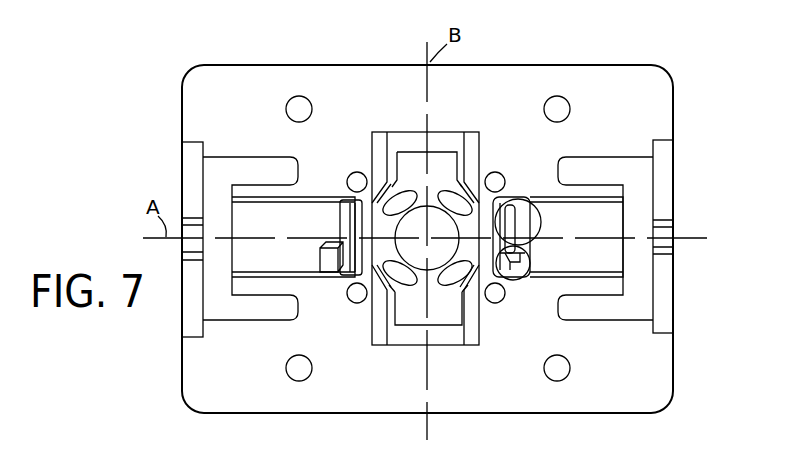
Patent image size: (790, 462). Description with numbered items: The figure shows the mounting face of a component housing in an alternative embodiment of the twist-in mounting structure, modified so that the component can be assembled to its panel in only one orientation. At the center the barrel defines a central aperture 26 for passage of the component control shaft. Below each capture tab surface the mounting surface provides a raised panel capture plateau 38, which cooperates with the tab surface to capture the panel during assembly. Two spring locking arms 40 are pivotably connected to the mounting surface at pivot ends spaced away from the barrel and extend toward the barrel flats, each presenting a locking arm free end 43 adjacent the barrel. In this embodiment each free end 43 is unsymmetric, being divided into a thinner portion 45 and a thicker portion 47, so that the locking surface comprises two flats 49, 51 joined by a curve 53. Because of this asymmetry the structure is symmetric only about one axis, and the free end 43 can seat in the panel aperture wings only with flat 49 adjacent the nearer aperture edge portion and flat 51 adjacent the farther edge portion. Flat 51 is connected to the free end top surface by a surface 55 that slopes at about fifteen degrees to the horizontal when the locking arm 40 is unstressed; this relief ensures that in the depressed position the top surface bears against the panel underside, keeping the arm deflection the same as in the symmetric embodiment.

The central aperture 26 is at (420, 208).
The panel capture plateau 38 is at (402, 330).
The spring locking arm 40 is at (290, 263).
The locking arm free end 43 is at (336, 285).
The thinner portion 45 is at (518, 196).
The thicker portion 47 is at (520, 287).
The locking surface flat 49 is at (517, 220).
The locking surface flat 51 is at (535, 253).
The curve 53 is at (338, 243).
The sloping surface 55 is at (327, 260).